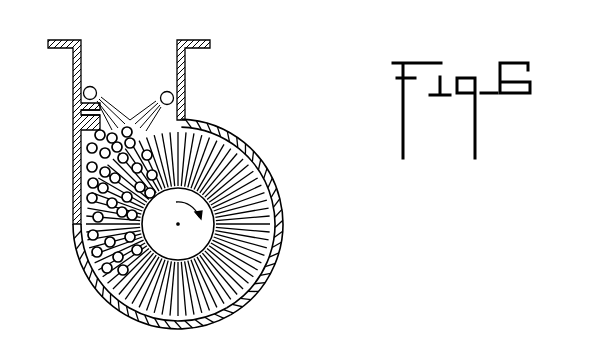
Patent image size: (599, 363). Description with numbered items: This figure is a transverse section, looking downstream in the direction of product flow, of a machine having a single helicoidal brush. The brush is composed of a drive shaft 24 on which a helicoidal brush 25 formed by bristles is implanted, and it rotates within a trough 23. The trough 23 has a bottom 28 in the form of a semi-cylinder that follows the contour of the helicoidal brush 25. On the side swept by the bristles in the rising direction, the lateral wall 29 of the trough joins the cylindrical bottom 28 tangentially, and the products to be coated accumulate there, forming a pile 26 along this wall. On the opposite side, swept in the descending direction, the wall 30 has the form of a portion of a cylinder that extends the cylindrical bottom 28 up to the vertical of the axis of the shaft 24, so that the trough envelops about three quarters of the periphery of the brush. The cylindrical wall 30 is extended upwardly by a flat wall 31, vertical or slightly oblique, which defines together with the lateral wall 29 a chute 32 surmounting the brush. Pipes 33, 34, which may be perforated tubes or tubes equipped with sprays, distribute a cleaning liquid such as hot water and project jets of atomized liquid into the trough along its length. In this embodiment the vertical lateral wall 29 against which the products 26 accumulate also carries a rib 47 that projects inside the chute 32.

The trough 23 is at (275, 170).
The drive shaft 24 is at (195, 238).
The helicoidal brush 25 is at (250, 211).
The pile 26 is at (87, 168).
The bottom 28 is at (218, 324).
The lateral wall 29 is at (73, 204).
The cylindrical wall 30 is at (237, 133).
The flat wall 31 is at (184, 86).
The chute 32 is at (128, 85).
The pipe 33 is at (163, 93).
The pipe 34 is at (92, 87).
The rib 47 is at (83, 114).